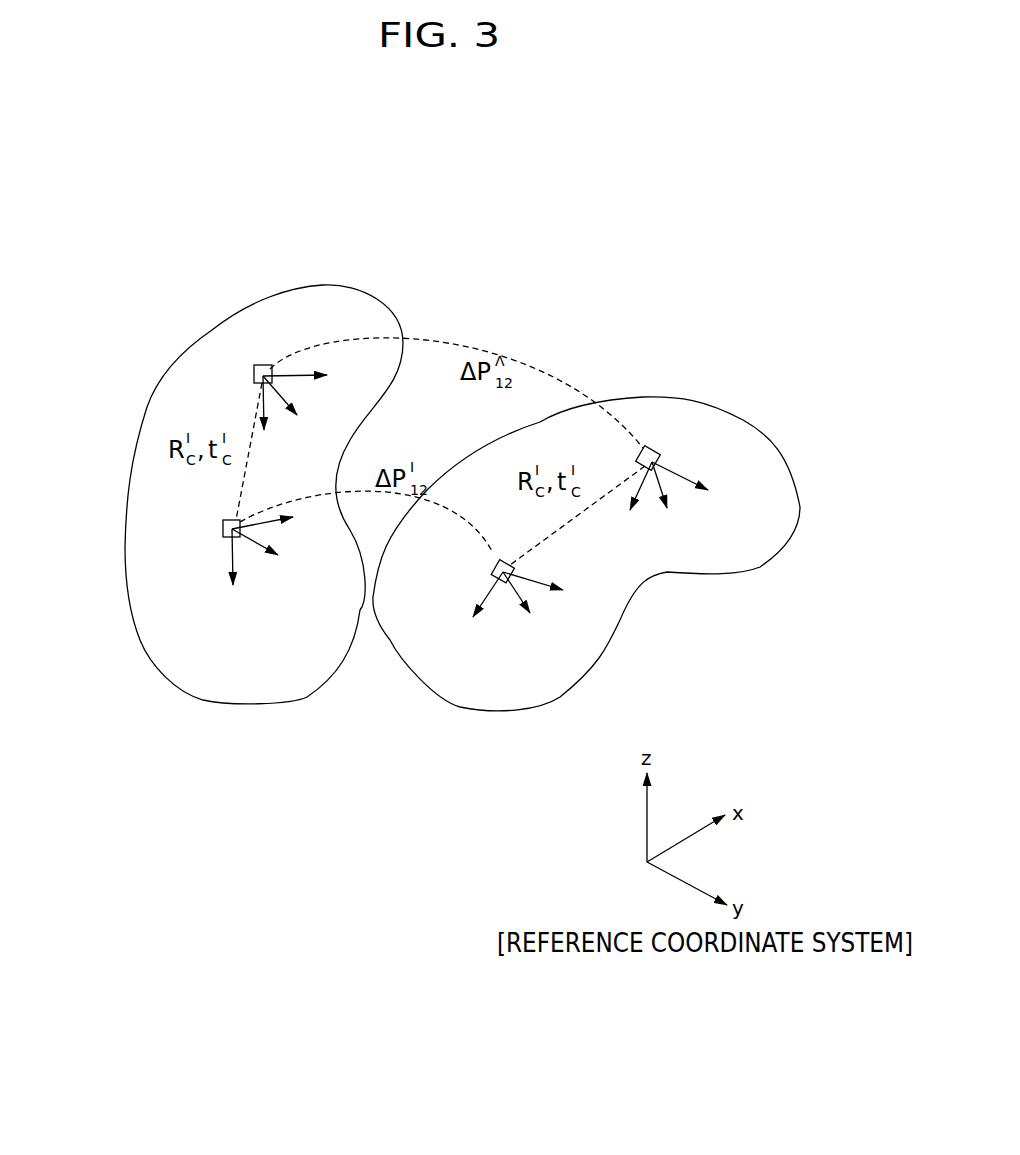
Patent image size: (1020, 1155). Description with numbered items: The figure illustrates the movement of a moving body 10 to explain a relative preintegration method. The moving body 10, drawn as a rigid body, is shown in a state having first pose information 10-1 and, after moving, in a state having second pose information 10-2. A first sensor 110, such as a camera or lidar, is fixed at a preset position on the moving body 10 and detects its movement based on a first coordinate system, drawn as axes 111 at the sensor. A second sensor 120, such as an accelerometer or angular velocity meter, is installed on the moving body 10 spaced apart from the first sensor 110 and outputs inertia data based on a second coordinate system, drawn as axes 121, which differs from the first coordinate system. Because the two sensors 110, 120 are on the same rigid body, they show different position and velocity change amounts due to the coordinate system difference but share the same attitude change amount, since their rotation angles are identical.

The moving body 10 is at (847, 624).
The first pose information 10-1 is at (127, 603).
The second pose information 10-2 is at (590, 673).
The first sensor 110 is at (266, 362).
The first marker coordinate axis 111 is at (300, 377).
The second sensor 120 is at (238, 523).
The second marker coordinate axis 121 is at (273, 528).